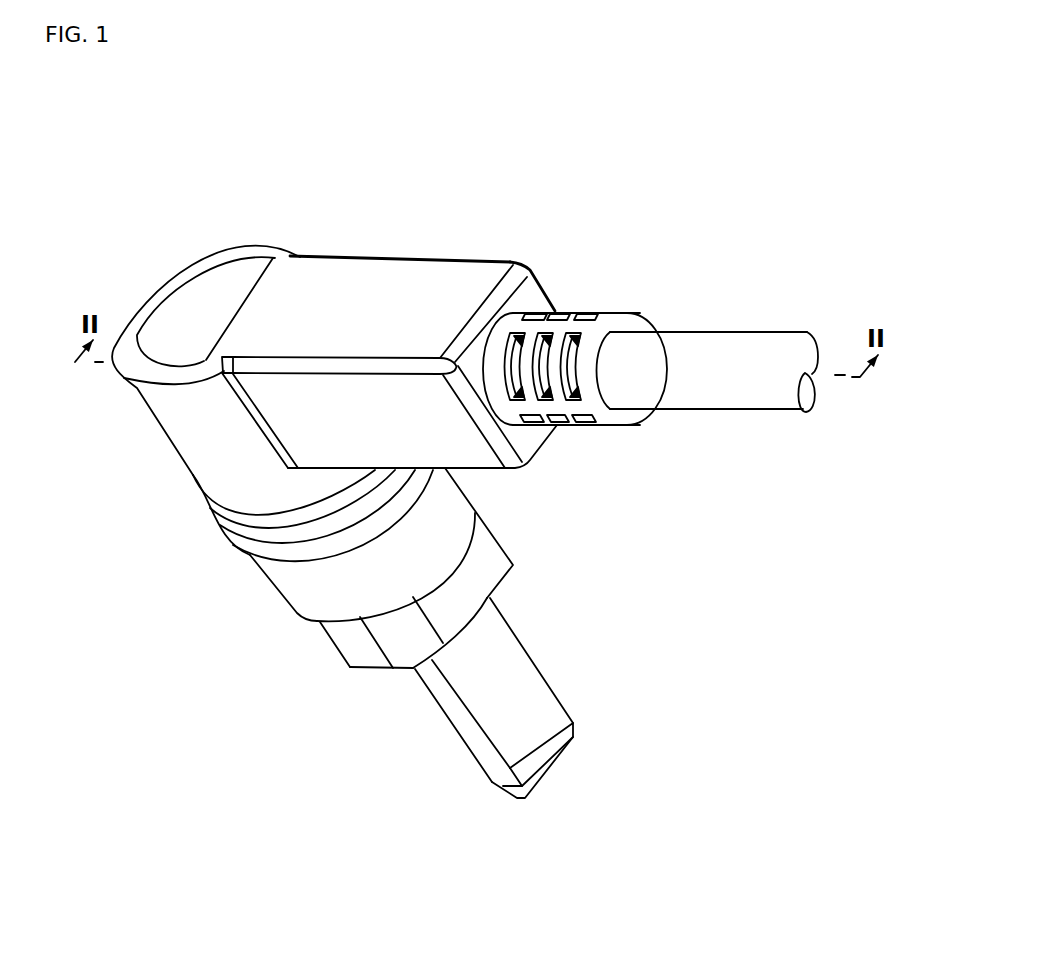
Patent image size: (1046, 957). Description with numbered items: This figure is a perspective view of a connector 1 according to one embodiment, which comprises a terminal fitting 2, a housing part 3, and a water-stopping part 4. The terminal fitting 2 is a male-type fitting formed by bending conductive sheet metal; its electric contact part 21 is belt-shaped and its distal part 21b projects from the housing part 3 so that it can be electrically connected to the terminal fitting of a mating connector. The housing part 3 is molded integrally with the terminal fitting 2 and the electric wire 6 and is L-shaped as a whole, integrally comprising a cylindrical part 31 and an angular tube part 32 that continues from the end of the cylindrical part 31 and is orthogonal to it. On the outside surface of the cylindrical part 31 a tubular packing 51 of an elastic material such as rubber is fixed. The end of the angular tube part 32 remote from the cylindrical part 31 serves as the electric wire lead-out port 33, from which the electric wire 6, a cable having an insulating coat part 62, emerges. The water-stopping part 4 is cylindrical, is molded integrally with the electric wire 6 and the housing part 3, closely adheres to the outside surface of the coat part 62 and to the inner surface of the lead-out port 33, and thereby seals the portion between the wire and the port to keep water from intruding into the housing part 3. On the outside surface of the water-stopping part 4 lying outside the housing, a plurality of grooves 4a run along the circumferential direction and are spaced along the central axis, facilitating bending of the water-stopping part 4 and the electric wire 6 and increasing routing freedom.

The connector 1 is at (465, 238).
The terminal fitting 2 is at (563, 778).
The housing part 3 is at (535, 492).
The water-stopping part 4 is at (603, 311).
The groove 4a is at (538, 395).
The electric wire 6 is at (778, 328).
The electric contact part 21 is at (463, 740).
The distal part 21b is at (487, 774).
The cylindrical part 31 is at (165, 435).
The angular tube part 32 is at (368, 257).
The electric wire lead-out port 33 is at (502, 257).
The tubular packing 51 is at (230, 547).
The coat part 62 is at (718, 332).